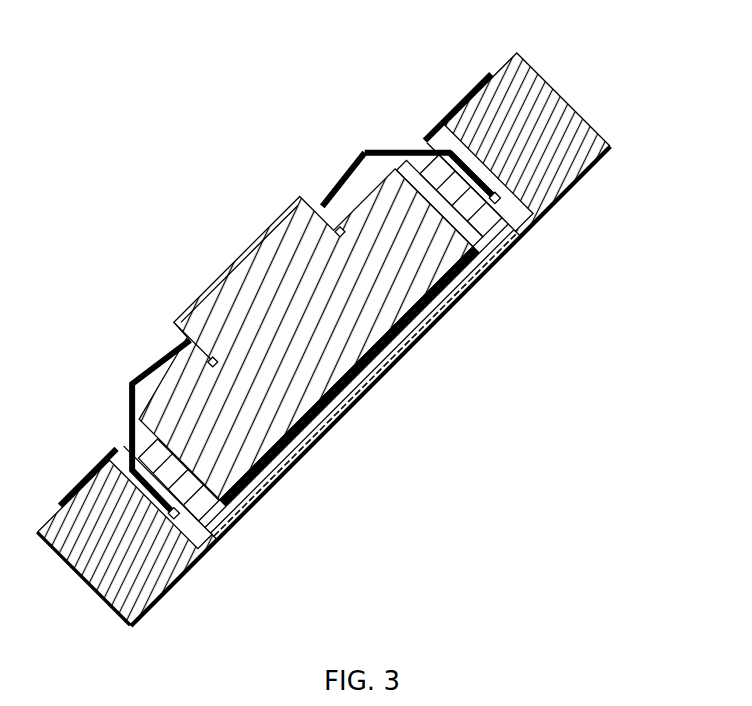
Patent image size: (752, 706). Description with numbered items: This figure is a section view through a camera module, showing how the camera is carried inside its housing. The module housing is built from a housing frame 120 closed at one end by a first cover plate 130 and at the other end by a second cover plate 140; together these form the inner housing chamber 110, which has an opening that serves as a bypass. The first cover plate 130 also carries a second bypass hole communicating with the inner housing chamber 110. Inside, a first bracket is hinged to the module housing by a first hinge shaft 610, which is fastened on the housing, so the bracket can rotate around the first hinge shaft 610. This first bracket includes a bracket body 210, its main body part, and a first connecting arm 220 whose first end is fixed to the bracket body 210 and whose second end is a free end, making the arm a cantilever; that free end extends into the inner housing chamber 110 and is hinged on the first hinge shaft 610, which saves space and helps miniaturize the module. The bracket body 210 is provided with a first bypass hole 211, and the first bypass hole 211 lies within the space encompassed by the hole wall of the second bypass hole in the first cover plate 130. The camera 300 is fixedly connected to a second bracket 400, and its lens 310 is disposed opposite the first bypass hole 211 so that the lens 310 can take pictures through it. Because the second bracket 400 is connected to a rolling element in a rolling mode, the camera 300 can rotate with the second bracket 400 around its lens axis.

The inner housing chamber 110 is at (512, 182).
The housing frame 120 is at (527, 135).
The first cover plate 130 is at (456, 125).
The second cover plate 140 is at (553, 207).
The bracket body 210 is at (350, 175).
The first bypass hole 211 is at (322, 202).
The first connecting arm 220 is at (418, 150).
The camera 300 is at (380, 307).
The lens 310 is at (247, 278).
The second bracket 400 is at (490, 208).
The first hinge shaft 610 is at (490, 175).